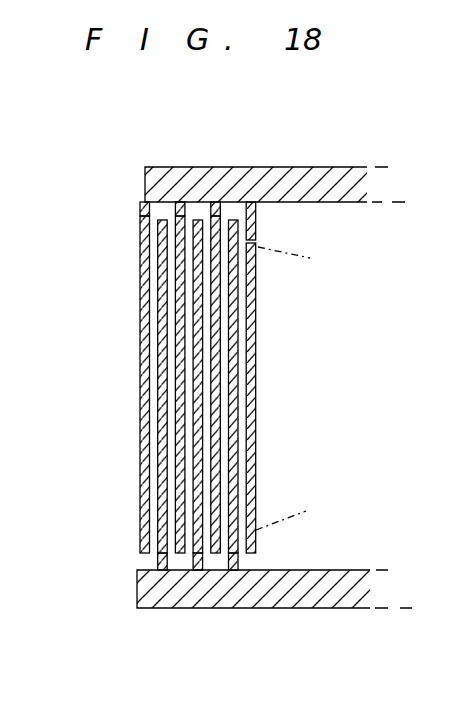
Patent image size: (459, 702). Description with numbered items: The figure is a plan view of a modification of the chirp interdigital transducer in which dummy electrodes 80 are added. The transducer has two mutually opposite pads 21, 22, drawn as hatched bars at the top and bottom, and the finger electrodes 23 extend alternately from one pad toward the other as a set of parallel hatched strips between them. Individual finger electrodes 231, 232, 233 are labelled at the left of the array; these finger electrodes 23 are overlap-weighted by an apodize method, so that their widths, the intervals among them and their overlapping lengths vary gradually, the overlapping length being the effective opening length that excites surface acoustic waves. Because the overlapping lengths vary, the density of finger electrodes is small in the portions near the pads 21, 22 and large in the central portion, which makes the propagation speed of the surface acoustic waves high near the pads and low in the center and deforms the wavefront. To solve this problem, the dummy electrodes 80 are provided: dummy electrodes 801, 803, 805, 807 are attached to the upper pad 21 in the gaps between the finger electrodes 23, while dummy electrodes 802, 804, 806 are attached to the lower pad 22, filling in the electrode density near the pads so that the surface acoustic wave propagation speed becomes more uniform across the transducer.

The pad 21 is at (320, 203).
The pad 22 is at (324, 570).
The finger electrodes 23 is at (177, 377).
The finger electrode 231 is at (140, 290).
The finger electrode 232 is at (158, 328).
The finger electrode 233 is at (78, 230).
The dummy electrodes 80 is at (206, 395).
The dummy electrode 801 is at (146, 212).
The dummy electrode 802 is at (164, 572).
The dummy electrode 803 is at (182, 214).
The dummy electrode 804 is at (200, 560).
The dummy electrode 805 is at (217, 214).
The dummy electrode 806 is at (240, 558).
The dummy electrode 807 is at (256, 236).